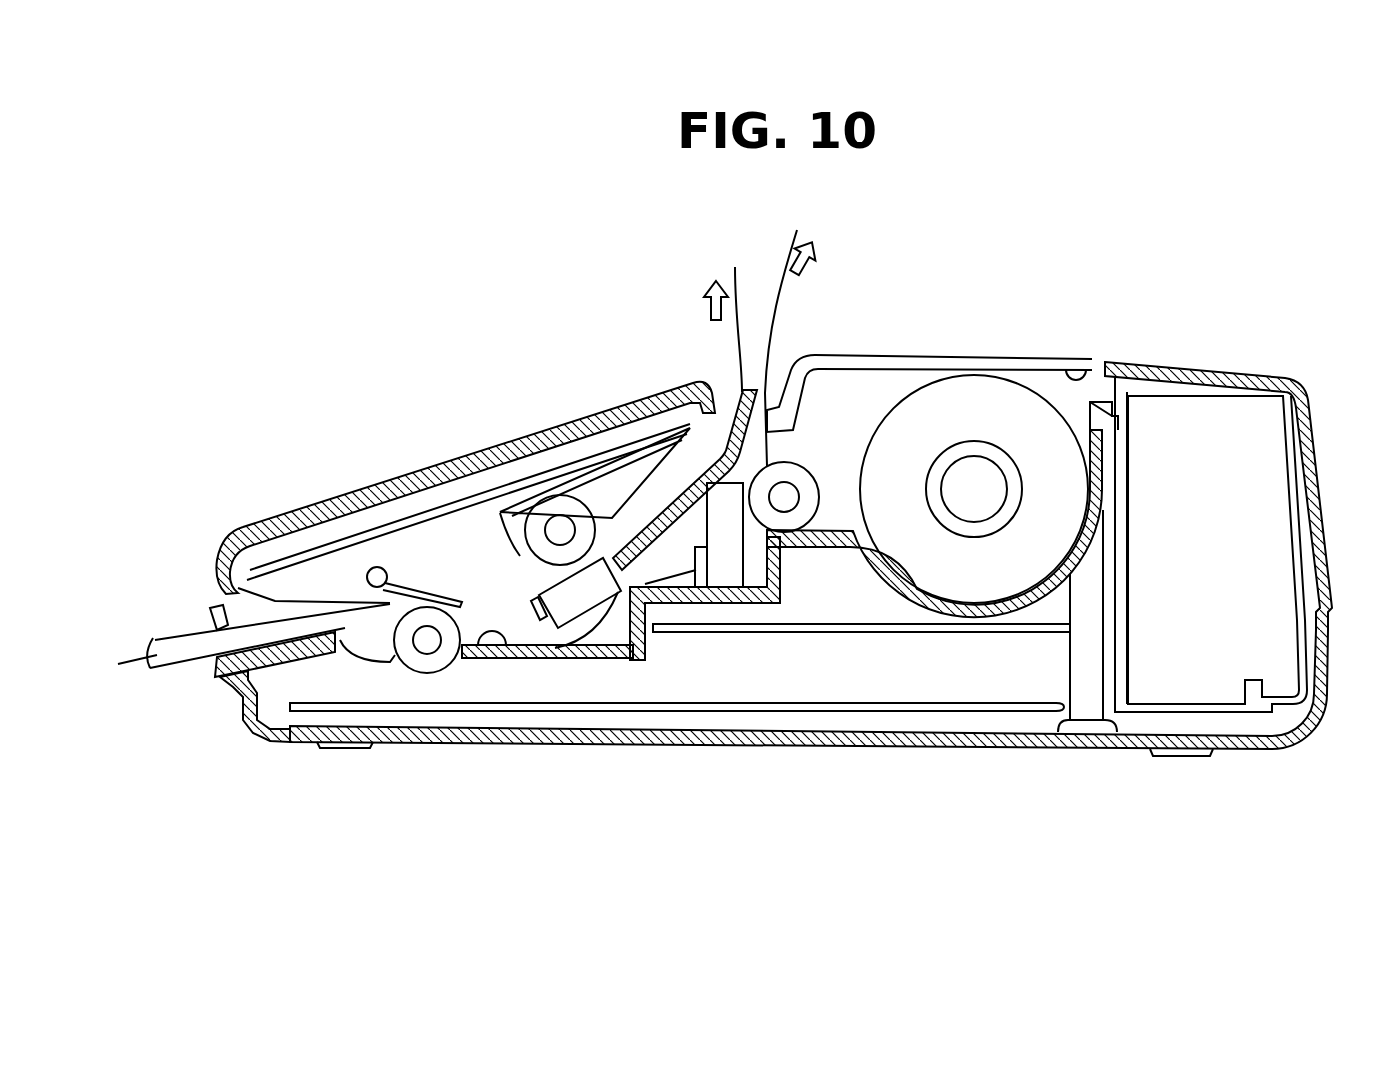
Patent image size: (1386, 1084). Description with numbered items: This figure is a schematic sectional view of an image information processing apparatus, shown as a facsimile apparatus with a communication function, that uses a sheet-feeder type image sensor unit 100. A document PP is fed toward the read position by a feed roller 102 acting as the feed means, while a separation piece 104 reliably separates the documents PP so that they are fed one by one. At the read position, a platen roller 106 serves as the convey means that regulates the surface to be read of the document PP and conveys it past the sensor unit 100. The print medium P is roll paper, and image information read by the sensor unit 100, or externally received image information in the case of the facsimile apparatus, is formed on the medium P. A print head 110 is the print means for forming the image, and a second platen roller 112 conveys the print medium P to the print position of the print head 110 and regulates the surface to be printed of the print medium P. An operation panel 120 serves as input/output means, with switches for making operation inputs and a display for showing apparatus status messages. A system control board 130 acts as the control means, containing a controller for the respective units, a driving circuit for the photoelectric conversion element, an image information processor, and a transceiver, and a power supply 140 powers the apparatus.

The sheet-feeder type image sensor unit 100 is at (590, 593).
The feed roller 102 is at (423, 665).
The separation piece 104 is at (383, 560).
The platen roller 106 is at (567, 507).
The print head 110 is at (728, 565).
The platen roller 112 is at (790, 476).
The operation panel 120 is at (402, 592).
The system control board 130 is at (980, 712).
The power supply 140 is at (1220, 420).
The print medium P is at (1085, 262).
The document PP is at (733, 350).